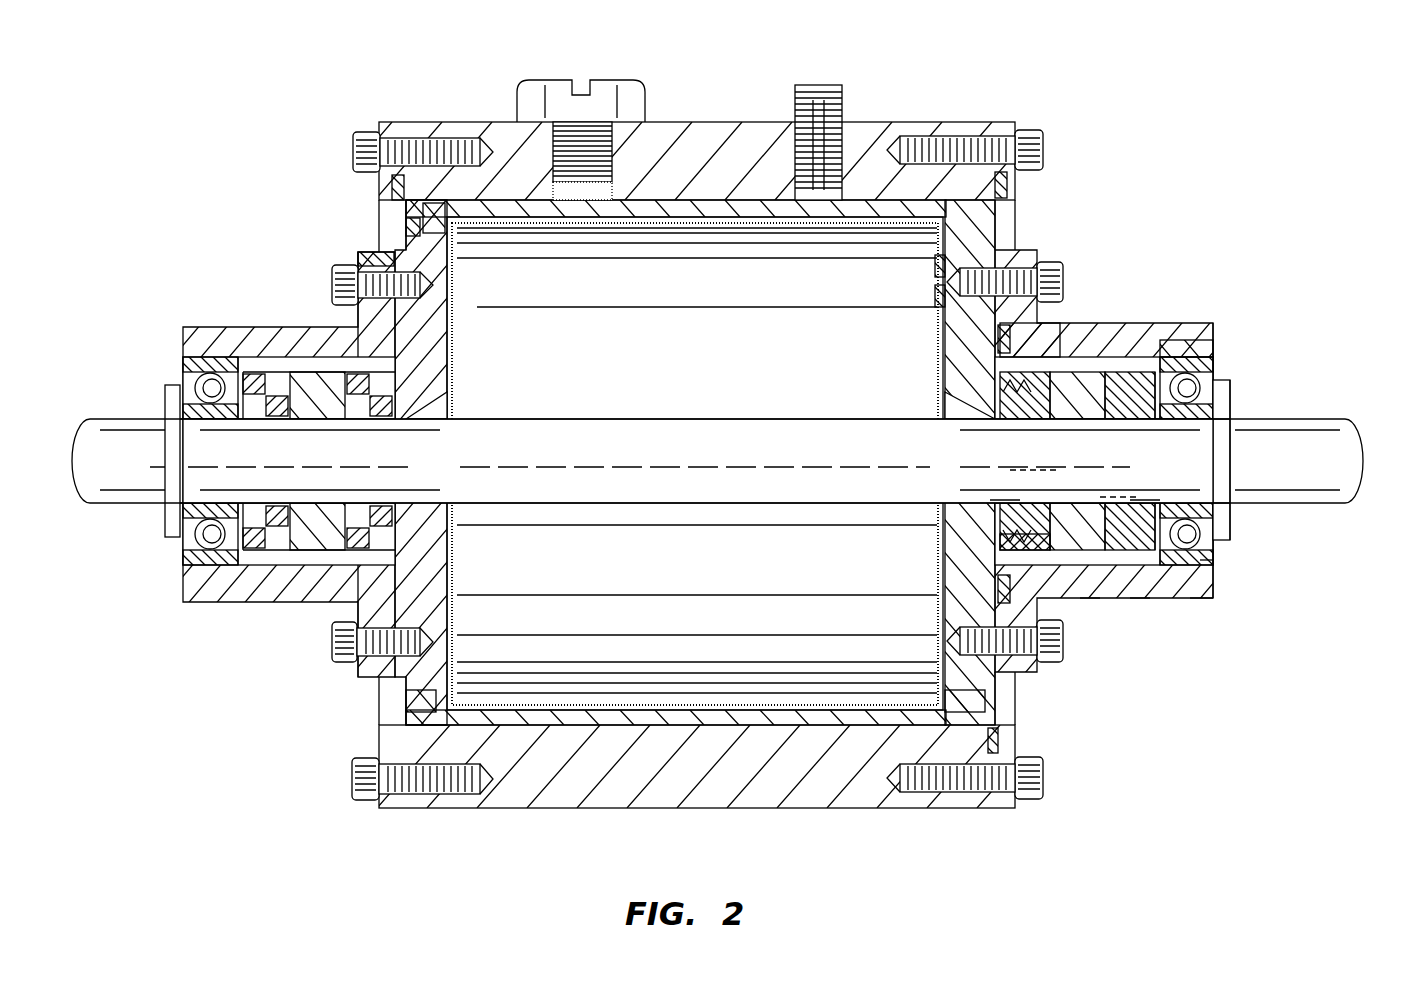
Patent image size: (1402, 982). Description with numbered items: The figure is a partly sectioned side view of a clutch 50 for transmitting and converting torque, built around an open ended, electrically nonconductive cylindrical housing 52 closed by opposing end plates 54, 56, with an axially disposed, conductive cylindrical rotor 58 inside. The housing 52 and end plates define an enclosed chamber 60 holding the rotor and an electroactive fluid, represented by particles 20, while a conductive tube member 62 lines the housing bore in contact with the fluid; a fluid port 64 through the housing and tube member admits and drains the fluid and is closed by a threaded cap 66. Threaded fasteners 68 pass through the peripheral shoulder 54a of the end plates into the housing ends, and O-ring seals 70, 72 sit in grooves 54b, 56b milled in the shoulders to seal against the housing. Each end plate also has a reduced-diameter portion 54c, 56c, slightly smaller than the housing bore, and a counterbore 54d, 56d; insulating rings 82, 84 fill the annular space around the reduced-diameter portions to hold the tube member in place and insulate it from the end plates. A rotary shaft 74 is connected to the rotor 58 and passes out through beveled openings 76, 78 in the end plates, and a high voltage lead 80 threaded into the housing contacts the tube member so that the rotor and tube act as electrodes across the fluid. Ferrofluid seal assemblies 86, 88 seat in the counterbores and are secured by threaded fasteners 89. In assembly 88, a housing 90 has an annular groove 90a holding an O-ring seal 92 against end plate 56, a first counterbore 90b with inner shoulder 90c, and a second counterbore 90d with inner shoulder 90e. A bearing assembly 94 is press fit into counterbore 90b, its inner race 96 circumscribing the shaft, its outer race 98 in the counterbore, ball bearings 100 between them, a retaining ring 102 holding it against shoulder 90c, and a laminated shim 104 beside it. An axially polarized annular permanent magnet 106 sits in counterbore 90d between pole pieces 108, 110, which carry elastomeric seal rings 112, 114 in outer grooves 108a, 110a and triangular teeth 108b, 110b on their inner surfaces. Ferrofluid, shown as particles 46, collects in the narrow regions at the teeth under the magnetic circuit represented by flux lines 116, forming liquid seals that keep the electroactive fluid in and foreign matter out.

The particles 20 is at (628, 722).
The particles 46 is at (1000, 500).
The clutch 50 is at (717, 430).
The cylindrical housing 52 is at (738, 122).
The end plate 54 is at (379, 207).
The outer shoulder 54a is at (425, 205).
The groove 54b is at (392, 185).
The reduced-diameter portion 54c is at (406, 227).
The counterbore 54d is at (360, 256).
The end plate 56 is at (1015, 200).
The groove 56b is at (1007, 185).
The reduced-diameter portion 56c is at (935, 264).
The counterbore 56d is at (935, 294).
The rotor 58 is at (700, 381).
The chamber 60 is at (522, 712).
The tube member 62 is at (713, 722).
The fluid port 64 is at (553, 165).
The threaded cap 66 is at (603, 80).
The threaded fasteners 68 is at (365, 132).
The O-ring seal 70 is at (379, 738).
The O-ring seal 72 is at (1015, 742).
The rotary shaft 74 is at (717, 455).
The opening 76 is at (447, 412).
The opening 78 is at (945, 410).
The high voltage lead 80 is at (842, 100).
The insulating ring 82 is at (406, 702).
The insulating ring 84 is at (985, 706).
The ferrofluid seal assembly 86 is at (331, 464).
The ferrofluid seal assembly 88 is at (1085, 451).
The threaded fasteners 89 is at (332, 285).
The housing 90 is at (1100, 335).
The annular groove 90a is at (998, 585).
The first counterbore 90b is at (1213, 560).
The first inner shoulder 90c is at (1195, 598).
The second counterbore 90d is at (1089, 610).
The second inner shoulder 90e is at (1149, 610).
The O-ring seal 92 is at (998, 340).
The bearing assembly 94 is at (1218, 555).
The inner race 96 is at (1190, 382).
The outer race 98 is at (1185, 370).
The ball bearings 100 is at (1205, 345).
The retaining ring 102 is at (1230, 400).
The laminated shim 104 is at (1228, 385).
The annular permanent magnet 106 is at (1105, 340).
The pole piece 108 is at (1000, 392).
The groove 108a is at (1010, 416).
The teeth 108b is at (1040, 419).
The pole piece 110 is at (1122, 370).
The groove 110a is at (1150, 419).
The teeth 110b is at (1122, 419).
The elastomeric seal ring 112 is at (1000, 540).
The elastomeric seal ring 114 is at (1128, 470).
The flux lines 116 is at (1060, 470).